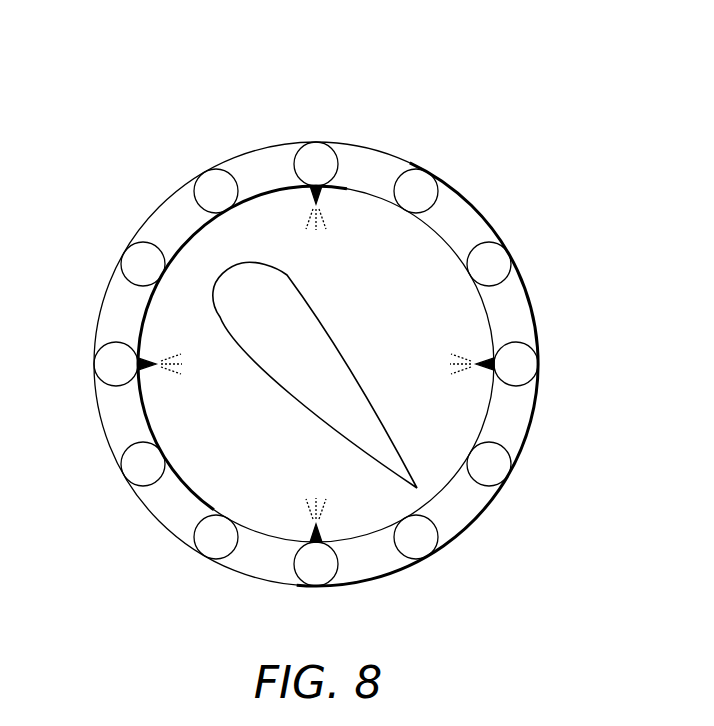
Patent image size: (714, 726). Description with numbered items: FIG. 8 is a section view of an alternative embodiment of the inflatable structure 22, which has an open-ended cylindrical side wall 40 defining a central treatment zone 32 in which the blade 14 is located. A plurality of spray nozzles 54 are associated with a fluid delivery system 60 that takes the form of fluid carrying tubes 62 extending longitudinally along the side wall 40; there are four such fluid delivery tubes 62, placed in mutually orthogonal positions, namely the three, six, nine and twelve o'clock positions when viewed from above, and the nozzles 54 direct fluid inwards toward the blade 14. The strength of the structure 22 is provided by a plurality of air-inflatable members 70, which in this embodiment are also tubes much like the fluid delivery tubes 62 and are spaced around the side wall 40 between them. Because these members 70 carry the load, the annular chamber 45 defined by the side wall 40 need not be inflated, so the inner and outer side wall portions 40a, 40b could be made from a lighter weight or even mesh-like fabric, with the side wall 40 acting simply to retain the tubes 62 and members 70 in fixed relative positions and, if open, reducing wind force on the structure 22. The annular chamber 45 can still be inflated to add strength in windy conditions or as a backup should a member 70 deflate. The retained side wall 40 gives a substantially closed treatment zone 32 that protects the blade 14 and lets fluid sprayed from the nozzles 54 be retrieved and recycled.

The inflatable structure 22 is at (391, 96).
The fluid delivery tubes 62 is at (317, 150).
The air-inflatable members 70 is at (210, 178).
The cylindrical side wall 40 is at (478, 208).
The spray nozzles 54 is at (322, 196).
The fluid delivery system 60 is at (553, 325).
The central treatment zone 32 is at (373, 308).
The blade 14 is at (315, 375).
The inner side wall portion 40a is at (151, 410).
The outer side wall portion 40b is at (97, 414).
The annular chamber 45 is at (469, 517).